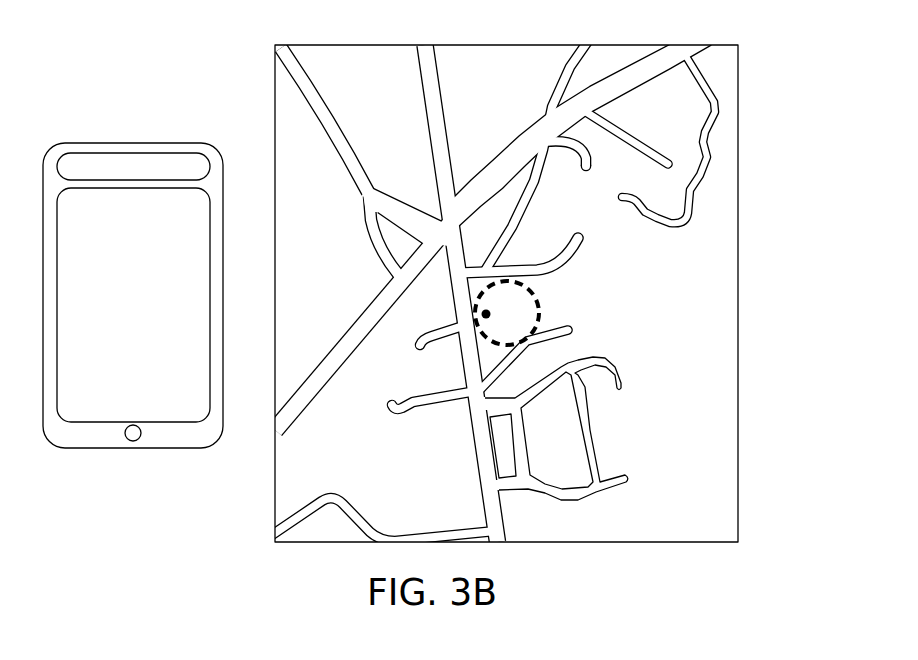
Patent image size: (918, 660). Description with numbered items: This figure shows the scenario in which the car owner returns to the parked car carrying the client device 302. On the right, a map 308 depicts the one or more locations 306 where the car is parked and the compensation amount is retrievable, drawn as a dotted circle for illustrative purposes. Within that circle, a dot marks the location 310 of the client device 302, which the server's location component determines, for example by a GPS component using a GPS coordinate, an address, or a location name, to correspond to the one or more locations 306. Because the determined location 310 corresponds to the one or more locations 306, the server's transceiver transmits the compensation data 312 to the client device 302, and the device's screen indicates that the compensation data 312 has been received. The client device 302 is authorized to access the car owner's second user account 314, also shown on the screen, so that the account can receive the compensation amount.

The client device 302 is at (133, 280).
The one or more locations 306 is at (538, 305).
The map 308 is at (660, 45).
The location 310 is at (486, 314).
The compensation data 312 is at (134, 247).
The second user account 314 is at (134, 361).